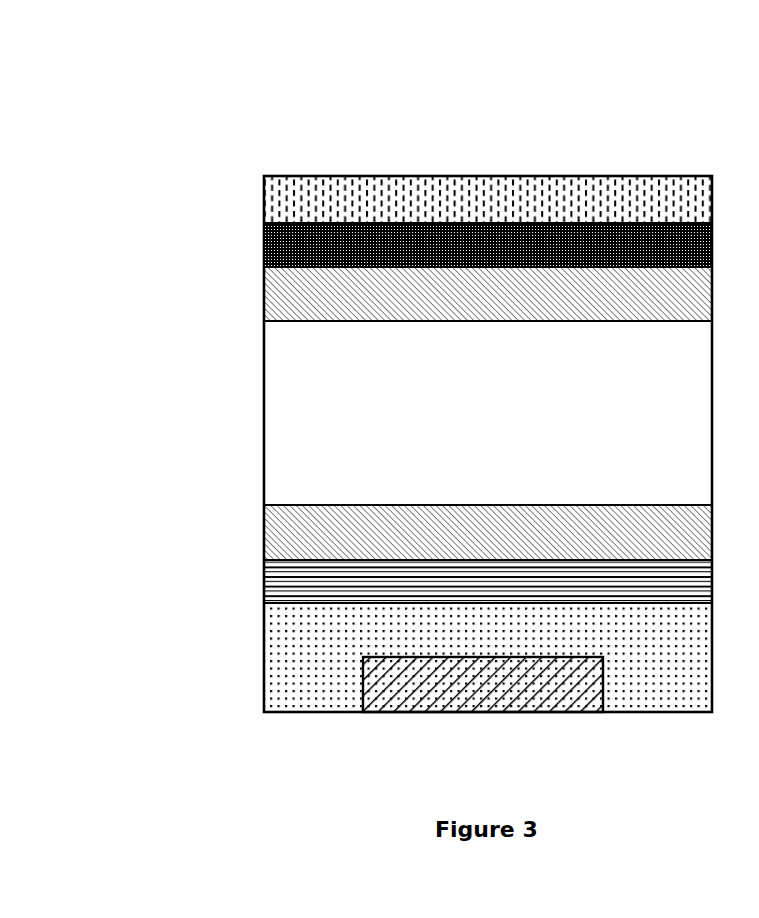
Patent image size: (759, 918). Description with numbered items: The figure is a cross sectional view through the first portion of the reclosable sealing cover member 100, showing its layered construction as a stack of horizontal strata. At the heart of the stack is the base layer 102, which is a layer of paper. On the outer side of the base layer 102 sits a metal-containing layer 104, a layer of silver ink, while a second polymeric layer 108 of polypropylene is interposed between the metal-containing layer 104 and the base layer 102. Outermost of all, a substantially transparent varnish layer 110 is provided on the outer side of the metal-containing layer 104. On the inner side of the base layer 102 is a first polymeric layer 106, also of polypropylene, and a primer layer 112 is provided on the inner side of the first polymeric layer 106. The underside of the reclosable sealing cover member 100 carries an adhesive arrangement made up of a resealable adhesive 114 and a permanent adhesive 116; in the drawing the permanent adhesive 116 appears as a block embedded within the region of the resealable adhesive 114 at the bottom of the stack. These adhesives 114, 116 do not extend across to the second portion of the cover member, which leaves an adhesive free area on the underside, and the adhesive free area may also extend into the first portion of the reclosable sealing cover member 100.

The reclosable sealing cover member 100 is at (396, 119).
The base layer 102 is at (392, 413).
The metal-containing layer 104 is at (264, 243).
The first polymeric layer 106 is at (391, 548).
The second polymeric layer 108 is at (264, 292).
The substantially transparent varnish layer 110 is at (297, 176).
The primer layer 112 is at (264, 578).
The resealable adhesive 114 is at (300, 658).
The permanent adhesive 116 is at (453, 712).